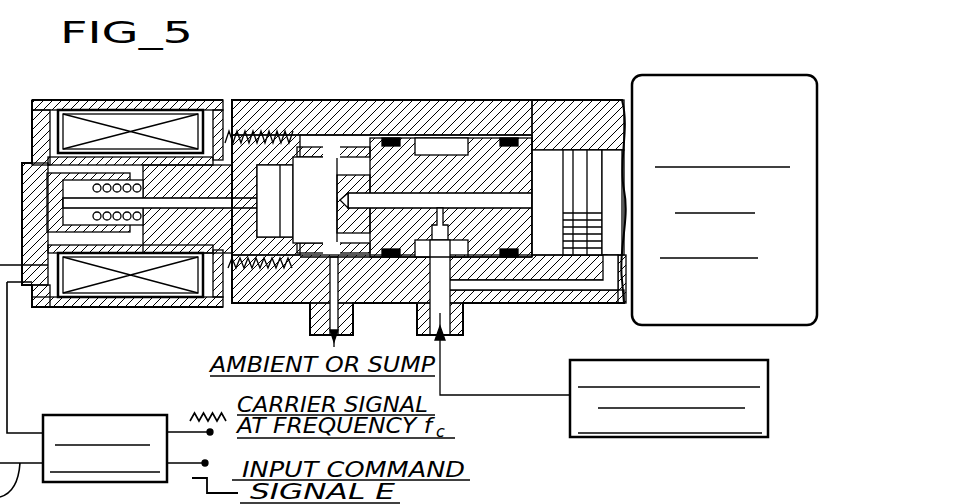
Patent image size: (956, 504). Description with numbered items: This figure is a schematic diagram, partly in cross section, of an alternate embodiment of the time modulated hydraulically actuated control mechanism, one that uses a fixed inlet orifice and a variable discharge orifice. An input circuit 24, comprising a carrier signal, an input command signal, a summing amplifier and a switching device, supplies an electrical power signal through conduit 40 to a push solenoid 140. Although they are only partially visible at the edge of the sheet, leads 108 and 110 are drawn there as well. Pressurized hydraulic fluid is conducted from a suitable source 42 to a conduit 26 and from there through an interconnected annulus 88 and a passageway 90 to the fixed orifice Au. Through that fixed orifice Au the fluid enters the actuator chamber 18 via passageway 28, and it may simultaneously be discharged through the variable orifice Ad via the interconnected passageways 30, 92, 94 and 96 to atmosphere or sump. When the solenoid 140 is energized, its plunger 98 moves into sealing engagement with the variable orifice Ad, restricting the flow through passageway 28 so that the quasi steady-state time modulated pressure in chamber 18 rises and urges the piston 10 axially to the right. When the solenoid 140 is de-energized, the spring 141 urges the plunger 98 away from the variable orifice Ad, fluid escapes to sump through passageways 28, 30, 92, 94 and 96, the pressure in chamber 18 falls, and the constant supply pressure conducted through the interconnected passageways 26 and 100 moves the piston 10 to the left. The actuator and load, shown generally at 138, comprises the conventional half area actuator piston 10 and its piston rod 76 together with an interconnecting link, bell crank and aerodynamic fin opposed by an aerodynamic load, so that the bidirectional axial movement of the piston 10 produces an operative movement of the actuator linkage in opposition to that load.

The half area actuator piston 10 is at (582, 153).
The actuator chamber 18 is at (548, 157).
The input circuit 24 is at (103, 414).
The conduit 26 is at (460, 328).
The passageway 28 is at (470, 195).
The passageway 30 is at (355, 137).
The conduit 40 is at (7, 375).
The source of pressurized hydraulic fluid 42 is at (766, 394).
The piston rod 76 is at (613, 183).
The annulus 88 is at (460, 268).
The passageway 90 is at (339, 294).
The passageway 92 is at (332, 238).
The passageway 94 is at (305, 306).
The passageway 96 is at (328, 337).
The plunger 98 is at (230, 200).
The passageway 100 is at (583, 285).
The lead 108 is at (603, 503).
The lead 110 is at (562, 497).
The actuator and load 138 is at (742, 92).
The push solenoid 140 is at (127, 115).
The spring 141 is at (128, 170).
The fixed orifice Au is at (410, 200).
The variable orifice Ad is at (335, 183).